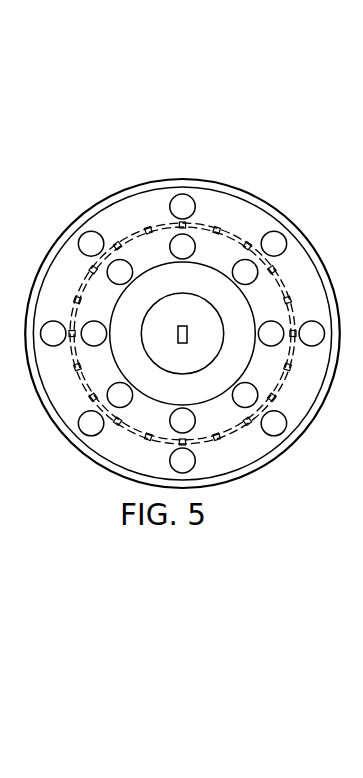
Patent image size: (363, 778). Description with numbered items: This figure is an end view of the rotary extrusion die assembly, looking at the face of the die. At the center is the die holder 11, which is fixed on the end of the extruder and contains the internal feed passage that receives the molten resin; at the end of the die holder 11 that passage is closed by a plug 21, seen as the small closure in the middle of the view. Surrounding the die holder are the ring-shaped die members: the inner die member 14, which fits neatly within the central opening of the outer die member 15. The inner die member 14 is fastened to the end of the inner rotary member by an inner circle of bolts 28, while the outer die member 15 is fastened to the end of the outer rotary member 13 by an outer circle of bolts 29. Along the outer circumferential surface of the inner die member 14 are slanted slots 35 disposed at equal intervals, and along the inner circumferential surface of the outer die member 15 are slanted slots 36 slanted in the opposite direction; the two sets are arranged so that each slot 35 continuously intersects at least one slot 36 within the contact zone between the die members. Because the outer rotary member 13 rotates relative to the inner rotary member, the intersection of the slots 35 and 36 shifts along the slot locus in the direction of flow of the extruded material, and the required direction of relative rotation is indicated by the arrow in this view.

The die holder 11 is at (233, 357).
The outer rotary member 13 is at (233, 472).
The inner die member 14 is at (223, 251).
The outer die member 15 is at (208, 200).
The plug 21 is at (167, 355).
The bolts 28 is at (178, 237).
The bolts 29 is at (180, 200).
The slanted slots 35 is at (120, 247).
The slanted slots 36 is at (118, 246).